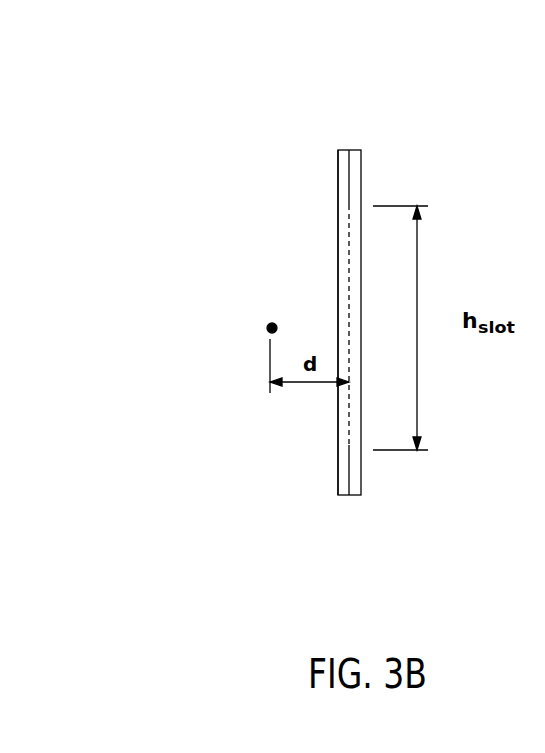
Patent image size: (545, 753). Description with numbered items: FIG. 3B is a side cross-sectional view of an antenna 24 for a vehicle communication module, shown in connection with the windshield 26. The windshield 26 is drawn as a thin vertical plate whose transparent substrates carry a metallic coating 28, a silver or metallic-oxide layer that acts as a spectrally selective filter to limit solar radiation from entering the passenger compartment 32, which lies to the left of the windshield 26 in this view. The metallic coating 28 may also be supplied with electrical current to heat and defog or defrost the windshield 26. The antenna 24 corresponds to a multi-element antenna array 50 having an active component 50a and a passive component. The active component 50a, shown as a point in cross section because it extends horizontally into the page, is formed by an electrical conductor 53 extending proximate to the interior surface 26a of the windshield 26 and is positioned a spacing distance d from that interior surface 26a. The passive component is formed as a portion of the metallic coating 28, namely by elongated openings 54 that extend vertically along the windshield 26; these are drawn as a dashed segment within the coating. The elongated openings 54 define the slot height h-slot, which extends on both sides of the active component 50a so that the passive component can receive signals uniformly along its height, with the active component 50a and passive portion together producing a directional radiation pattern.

The antenna 24 is at (335, 267).
The multi-element antenna array 50 is at (335, 267).
The windshield 26 is at (357, 183).
The interior surface 26a is at (338, 246).
The metallic coating 28 is at (349, 160).
The passenger compartment 32 is at (298, 285).
The active component 50a is at (207, 308).
The electrical conductor 53 is at (268, 324).
The elongated openings 54 is at (349, 405).